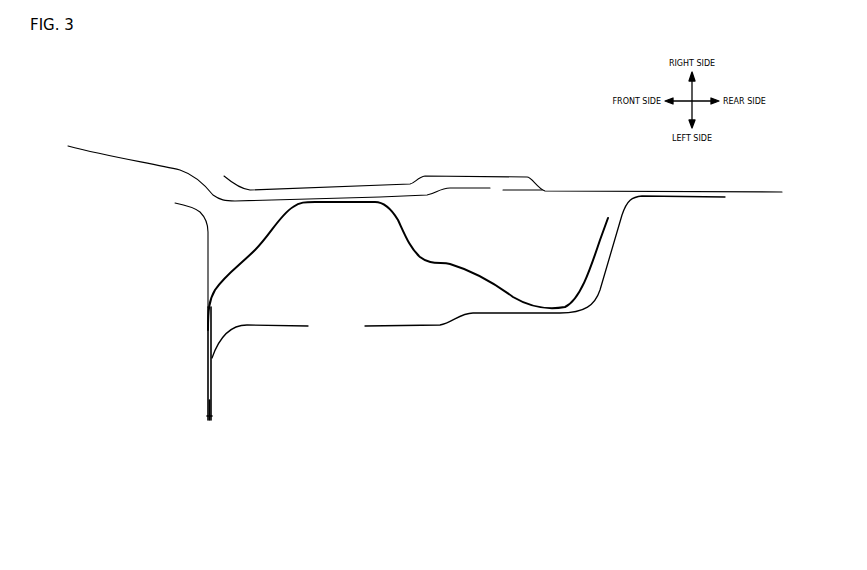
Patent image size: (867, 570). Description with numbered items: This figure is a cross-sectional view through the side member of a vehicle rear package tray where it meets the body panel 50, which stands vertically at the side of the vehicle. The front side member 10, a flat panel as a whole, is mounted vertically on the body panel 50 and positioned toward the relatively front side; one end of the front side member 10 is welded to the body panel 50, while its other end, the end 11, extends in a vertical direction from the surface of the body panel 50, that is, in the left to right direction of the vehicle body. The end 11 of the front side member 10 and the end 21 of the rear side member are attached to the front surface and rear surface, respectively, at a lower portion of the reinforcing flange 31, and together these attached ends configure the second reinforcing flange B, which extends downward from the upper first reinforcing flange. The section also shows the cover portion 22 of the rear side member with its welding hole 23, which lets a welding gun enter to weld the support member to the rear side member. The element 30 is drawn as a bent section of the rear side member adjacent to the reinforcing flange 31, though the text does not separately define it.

The front side member 10 is at (207, 270).
The end of the front side member 11 is at (207, 395).
The end of the rear side member 21 is at (212, 397).
The cover portion 22 is at (475, 313).
The welding hole 23 is at (338, 326).
The side panel 30 is at (460, 260).
The reinforcing flange 31 is at (212, 410).
The body panel 50 is at (467, 188).
The second reinforcing flange B is at (205, 420).